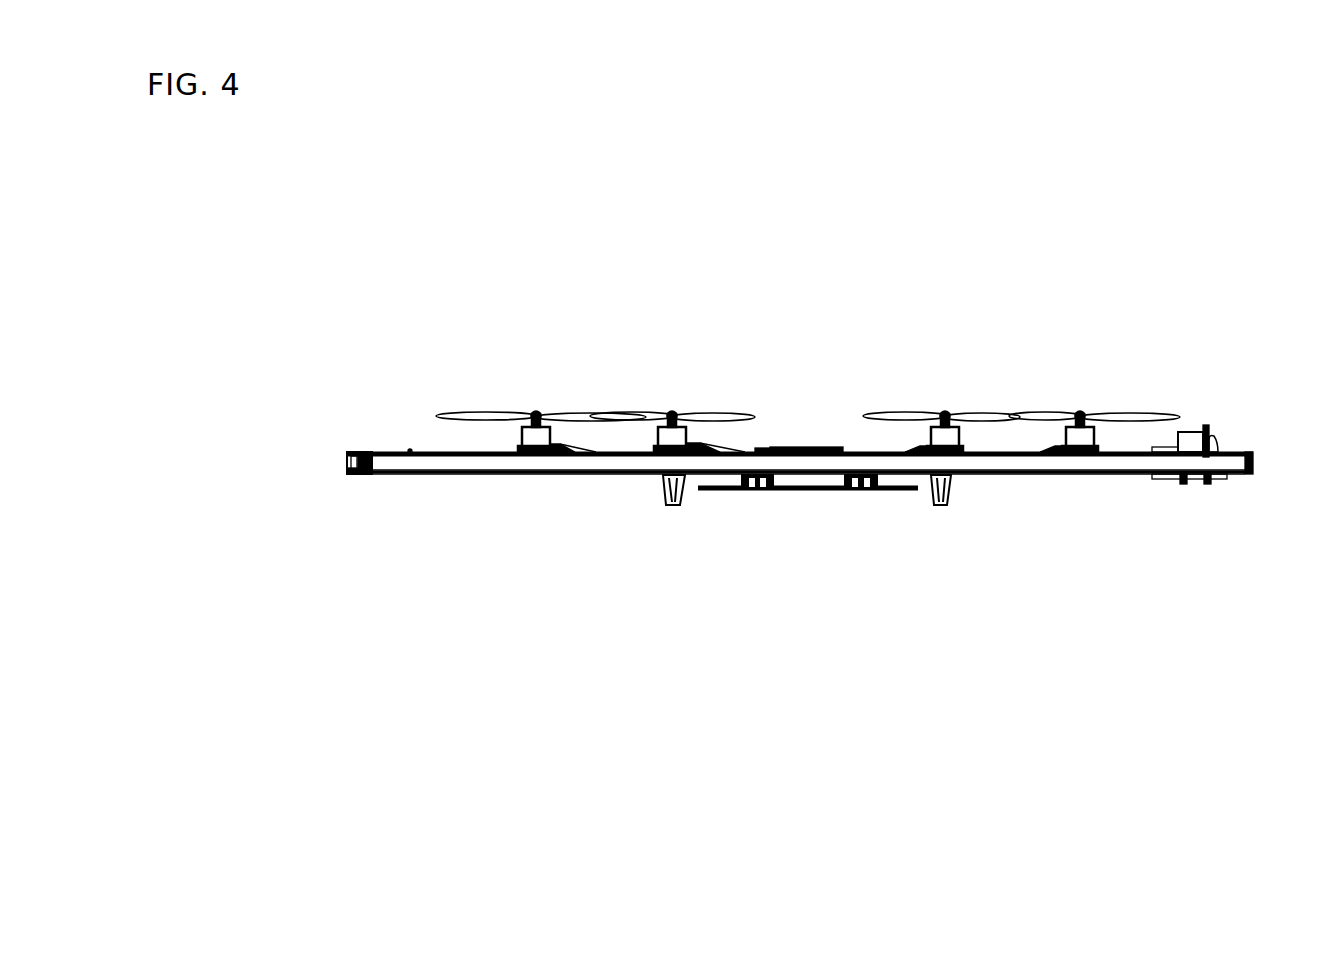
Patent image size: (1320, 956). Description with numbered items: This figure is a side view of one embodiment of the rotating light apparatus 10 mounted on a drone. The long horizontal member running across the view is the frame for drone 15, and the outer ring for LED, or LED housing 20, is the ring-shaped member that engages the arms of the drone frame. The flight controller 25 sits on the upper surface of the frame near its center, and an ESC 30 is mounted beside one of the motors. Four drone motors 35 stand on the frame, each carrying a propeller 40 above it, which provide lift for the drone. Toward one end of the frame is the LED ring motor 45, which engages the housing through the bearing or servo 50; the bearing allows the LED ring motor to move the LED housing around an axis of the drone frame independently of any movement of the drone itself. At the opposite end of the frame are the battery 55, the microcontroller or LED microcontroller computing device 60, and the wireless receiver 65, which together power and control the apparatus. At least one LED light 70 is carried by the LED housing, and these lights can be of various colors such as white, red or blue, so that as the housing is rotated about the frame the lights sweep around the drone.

The apparatus 10 is at (548, 474).
The frame for drone 15 is at (770, 450).
The outer ring for LED; LED housing 20 is at (1100, 455).
The flight controller 25 is at (812, 450).
The ESC 30 is at (690, 447).
The drone motor 35 is at (945, 410).
The propeller 40 is at (688, 433).
The LED ring motor 45 is at (1190, 432).
The bearing or servo 50 is at (428, 474).
The battery 55 is at (355, 474).
The microcontroller; LED microcontroller computing device 60 is at (350, 453).
The wireless receiver 65 is at (352, 450).
The LED light or light 70 is at (808, 473).